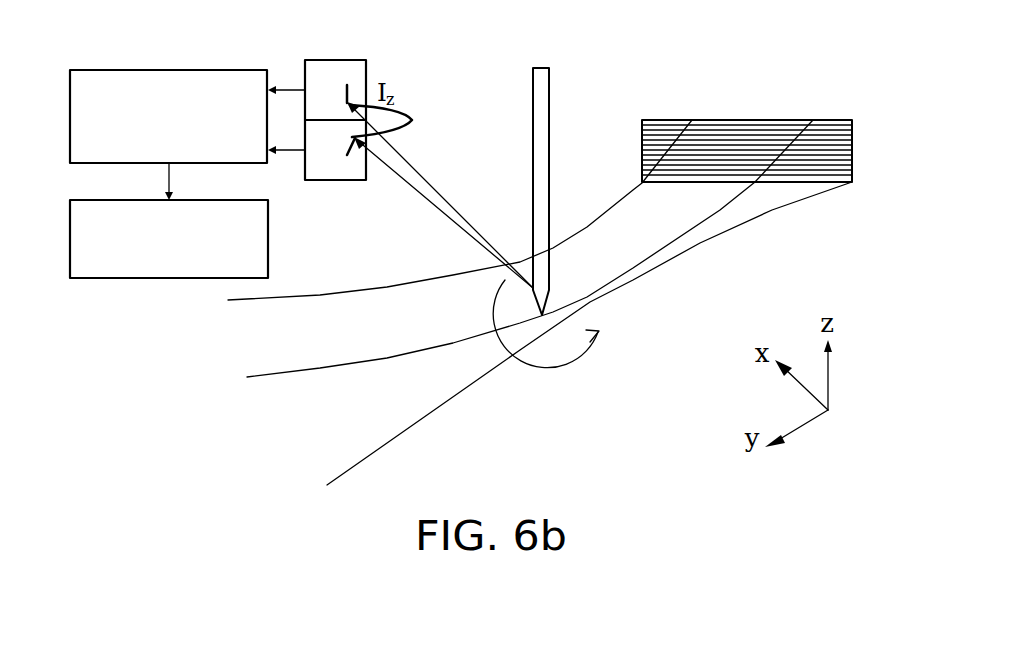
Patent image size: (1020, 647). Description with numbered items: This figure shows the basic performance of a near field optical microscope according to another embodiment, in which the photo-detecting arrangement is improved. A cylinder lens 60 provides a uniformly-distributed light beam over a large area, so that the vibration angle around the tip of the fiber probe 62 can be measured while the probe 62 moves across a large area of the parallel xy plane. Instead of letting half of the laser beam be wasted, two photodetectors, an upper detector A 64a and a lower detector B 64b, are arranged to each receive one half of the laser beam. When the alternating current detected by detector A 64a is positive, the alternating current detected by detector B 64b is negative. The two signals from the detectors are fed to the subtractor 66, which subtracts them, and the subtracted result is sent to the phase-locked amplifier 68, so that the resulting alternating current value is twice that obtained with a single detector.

The cylinder lens 60 is at (757, 120).
The probe 62 is at (550, 78).
The detector A 64a is at (325, 60).
The detector B 64b is at (325, 180).
The subtractor 66 is at (187, 70).
The phase-locked amplifier 68 is at (188, 279).